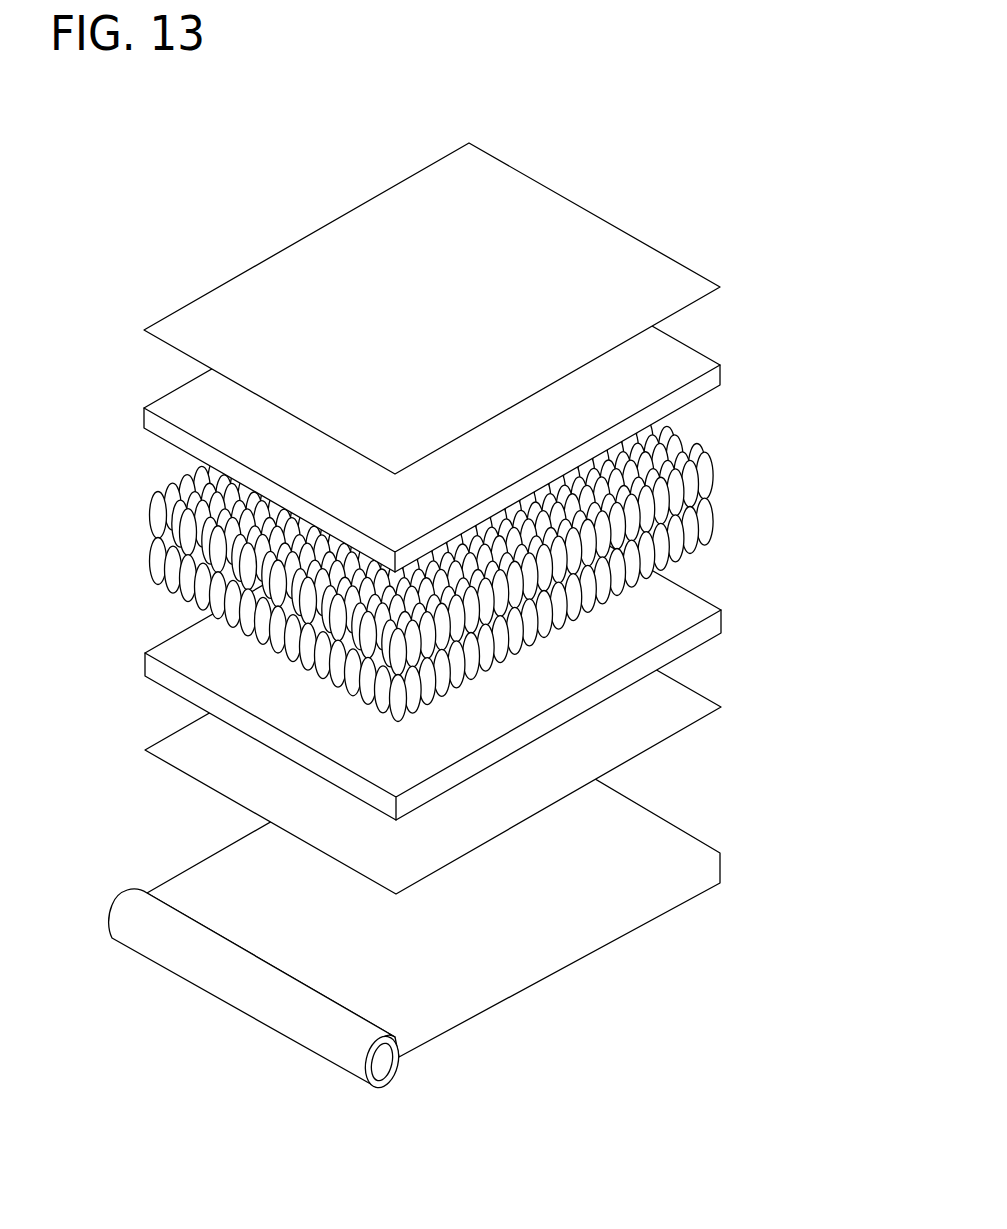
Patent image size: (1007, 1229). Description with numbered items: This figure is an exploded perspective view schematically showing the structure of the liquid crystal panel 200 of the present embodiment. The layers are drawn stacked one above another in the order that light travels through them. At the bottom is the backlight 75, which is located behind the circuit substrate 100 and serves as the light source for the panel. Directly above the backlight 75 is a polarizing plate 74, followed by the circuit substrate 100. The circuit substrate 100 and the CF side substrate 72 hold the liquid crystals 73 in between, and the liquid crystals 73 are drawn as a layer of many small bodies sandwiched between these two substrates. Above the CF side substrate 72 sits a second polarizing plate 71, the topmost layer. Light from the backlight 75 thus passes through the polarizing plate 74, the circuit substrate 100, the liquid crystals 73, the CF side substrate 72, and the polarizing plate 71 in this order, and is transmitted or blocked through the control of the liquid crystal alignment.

The liquid crystal panel 200 is at (773, 200).
The polarizing plate 71 is at (688, 285).
The CF side substrate 72 is at (688, 390).
The liquid crystals 73 is at (688, 487).
The circuit substrate 100 is at (688, 638).
The polarizing plate 74 is at (688, 697).
The backlight 75 is at (685, 887).